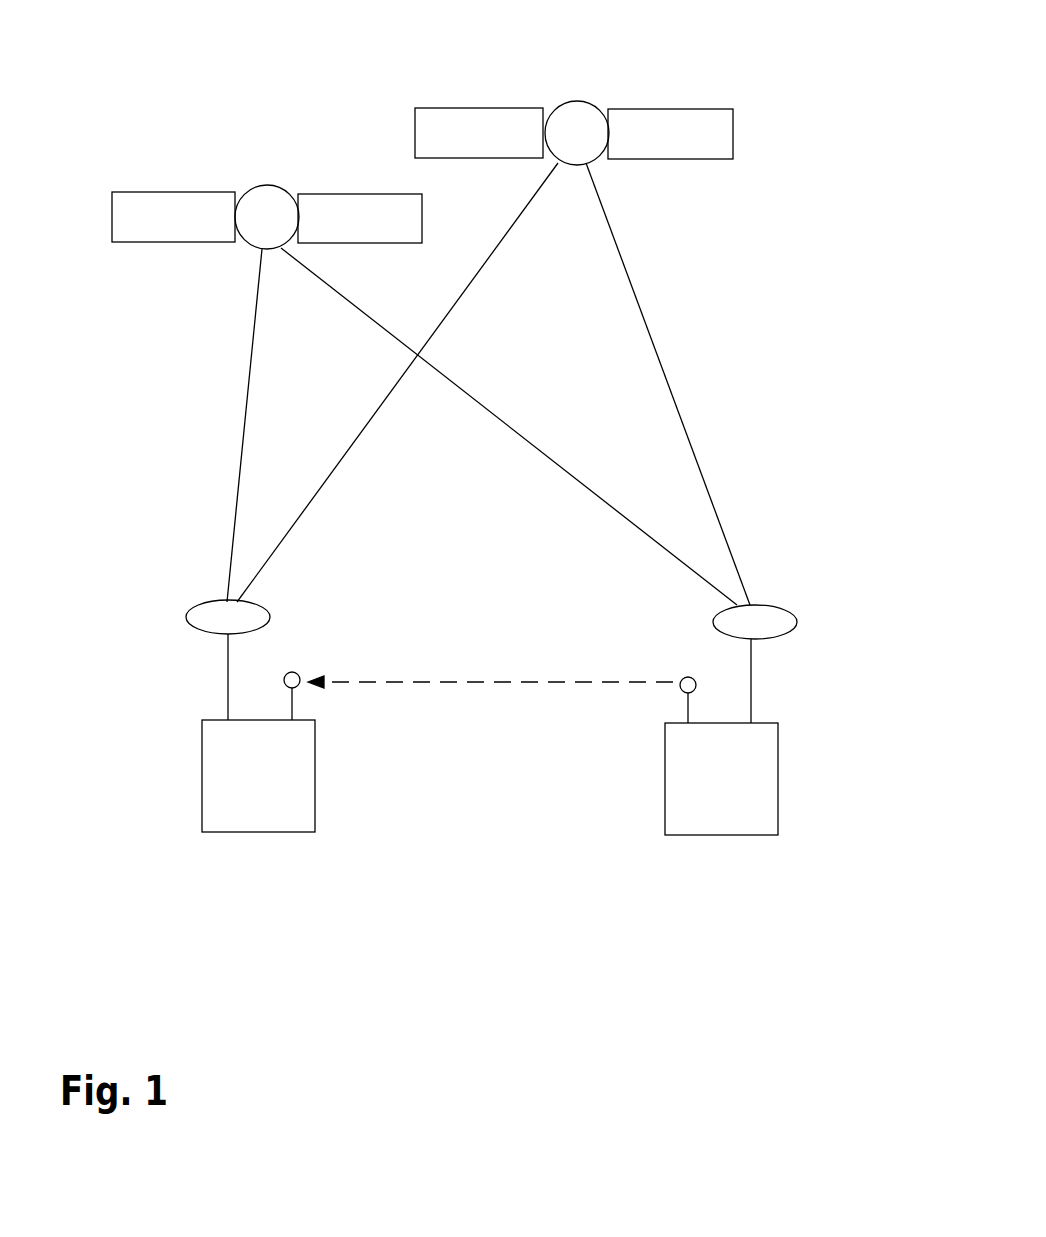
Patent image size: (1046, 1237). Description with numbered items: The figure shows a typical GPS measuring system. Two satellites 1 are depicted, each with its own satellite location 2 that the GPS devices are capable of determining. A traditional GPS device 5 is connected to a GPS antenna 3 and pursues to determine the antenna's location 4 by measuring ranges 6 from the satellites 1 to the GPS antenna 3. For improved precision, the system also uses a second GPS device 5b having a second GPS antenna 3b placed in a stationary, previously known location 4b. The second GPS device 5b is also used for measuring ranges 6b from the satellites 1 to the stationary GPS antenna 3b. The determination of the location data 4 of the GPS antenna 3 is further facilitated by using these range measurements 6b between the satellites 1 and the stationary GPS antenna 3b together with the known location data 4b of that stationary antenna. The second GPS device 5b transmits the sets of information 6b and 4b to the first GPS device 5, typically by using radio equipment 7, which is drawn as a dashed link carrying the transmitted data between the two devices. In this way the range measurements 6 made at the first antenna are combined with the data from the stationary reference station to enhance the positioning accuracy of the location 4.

The satellite 1 is at (422, 175).
The satellite location 2 is at (423, 87).
The GPS antenna 3 is at (228, 660).
The second GPS antenna 3b is at (755, 664).
The location data 4 is at (150, 557).
The known location 4b is at (830, 557).
The GPS device 5 is at (258, 776).
The second GPS device 5b is at (721, 779).
The range measurements 6 is at (364, 382).
The range measurements 6b is at (518, 384).
The radio equipment 7 is at (490, 678).